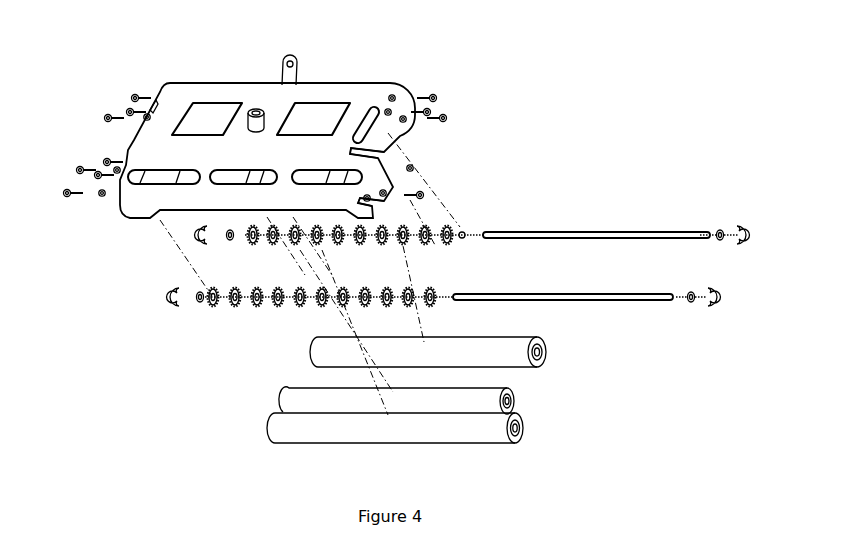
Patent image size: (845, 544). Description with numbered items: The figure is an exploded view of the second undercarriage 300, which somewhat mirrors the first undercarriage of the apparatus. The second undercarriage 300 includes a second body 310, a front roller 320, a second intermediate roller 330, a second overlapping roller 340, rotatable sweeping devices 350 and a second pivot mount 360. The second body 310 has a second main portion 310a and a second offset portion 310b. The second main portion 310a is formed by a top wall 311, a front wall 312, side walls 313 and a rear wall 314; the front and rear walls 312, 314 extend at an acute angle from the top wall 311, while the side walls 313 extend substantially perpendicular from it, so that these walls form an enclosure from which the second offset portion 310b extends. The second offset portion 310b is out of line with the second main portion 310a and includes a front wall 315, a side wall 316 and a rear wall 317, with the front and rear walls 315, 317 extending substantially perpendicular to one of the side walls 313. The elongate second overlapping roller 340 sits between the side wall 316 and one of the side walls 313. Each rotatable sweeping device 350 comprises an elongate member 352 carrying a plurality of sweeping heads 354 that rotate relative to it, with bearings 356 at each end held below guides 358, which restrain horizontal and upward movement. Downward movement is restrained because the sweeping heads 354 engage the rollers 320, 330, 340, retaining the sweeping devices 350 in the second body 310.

The second undercarriage 300 is at (516, 62).
The second body 310 is at (72, 280).
The second main portion 310a is at (100, 222).
The second offset portion 310b is at (510, 139).
The top wall 311 is at (215, 93).
The front wall 312 is at (345, 83).
The side walls 313 is at (130, 143).
The rear wall 314 is at (148, 200).
The front wall 315 is at (385, 153).
The side wall 316 is at (377, 175).
The rear wall 317 is at (357, 200).
The front roller 320 is at (549, 352).
The second intermediate roller 330 is at (514, 401).
The second overlapping roller 340 is at (526, 432).
The rotatable sweeping devices 350 is at (745, 297).
The elongate member 352 is at (648, 232).
The sweeping heads 354 is at (462, 233).
The bearings 356 is at (230, 241).
The guides 358 is at (749, 232).
The second pivot mount 360 is at (253, 110).